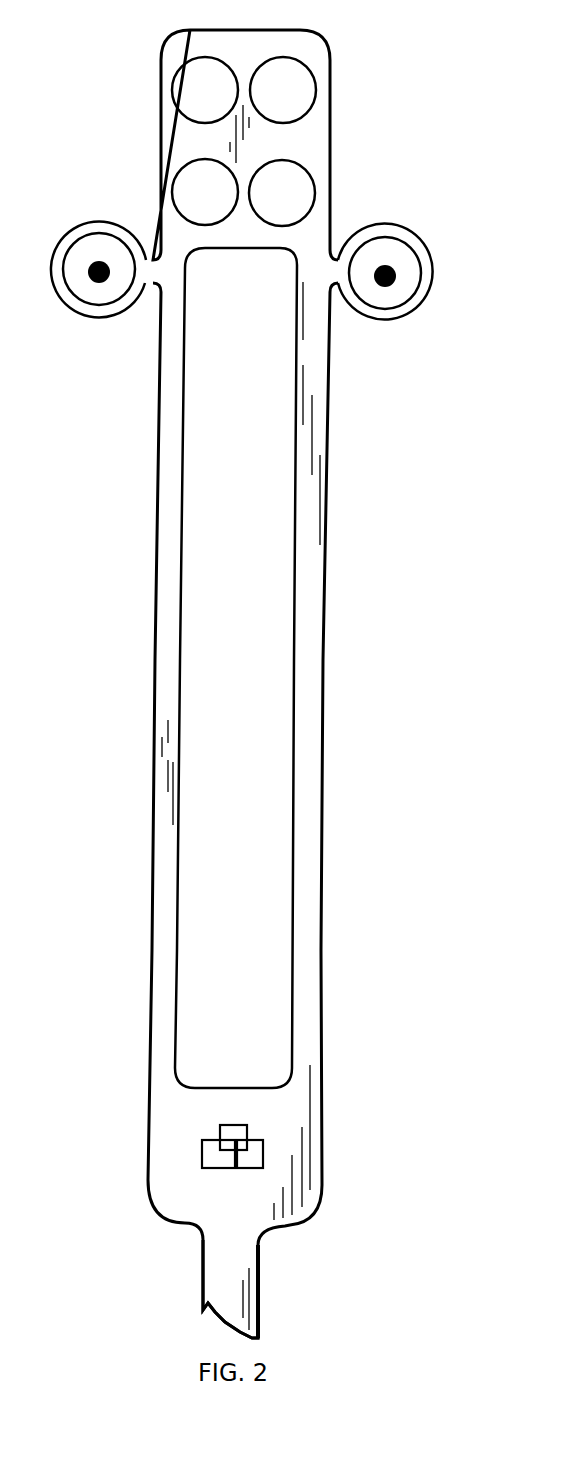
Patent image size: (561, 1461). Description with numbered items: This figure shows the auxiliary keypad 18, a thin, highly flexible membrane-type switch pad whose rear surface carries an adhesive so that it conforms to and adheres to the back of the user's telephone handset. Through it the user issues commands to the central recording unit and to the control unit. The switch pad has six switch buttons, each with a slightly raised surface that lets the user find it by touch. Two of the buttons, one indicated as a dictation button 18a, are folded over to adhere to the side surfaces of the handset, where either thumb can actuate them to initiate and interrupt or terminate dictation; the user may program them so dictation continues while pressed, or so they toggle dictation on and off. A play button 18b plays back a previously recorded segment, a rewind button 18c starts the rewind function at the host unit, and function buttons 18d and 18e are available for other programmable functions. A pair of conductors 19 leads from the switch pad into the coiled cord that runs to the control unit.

The keypad 18 is at (98, 510).
The dictation button 18a is at (405, 252).
The play button 18b is at (178, 180).
The rewind button 18c is at (315, 162).
The function button 18d is at (317, 70).
The function button 18e is at (178, 80).
The conductors 19 is at (262, 1257).